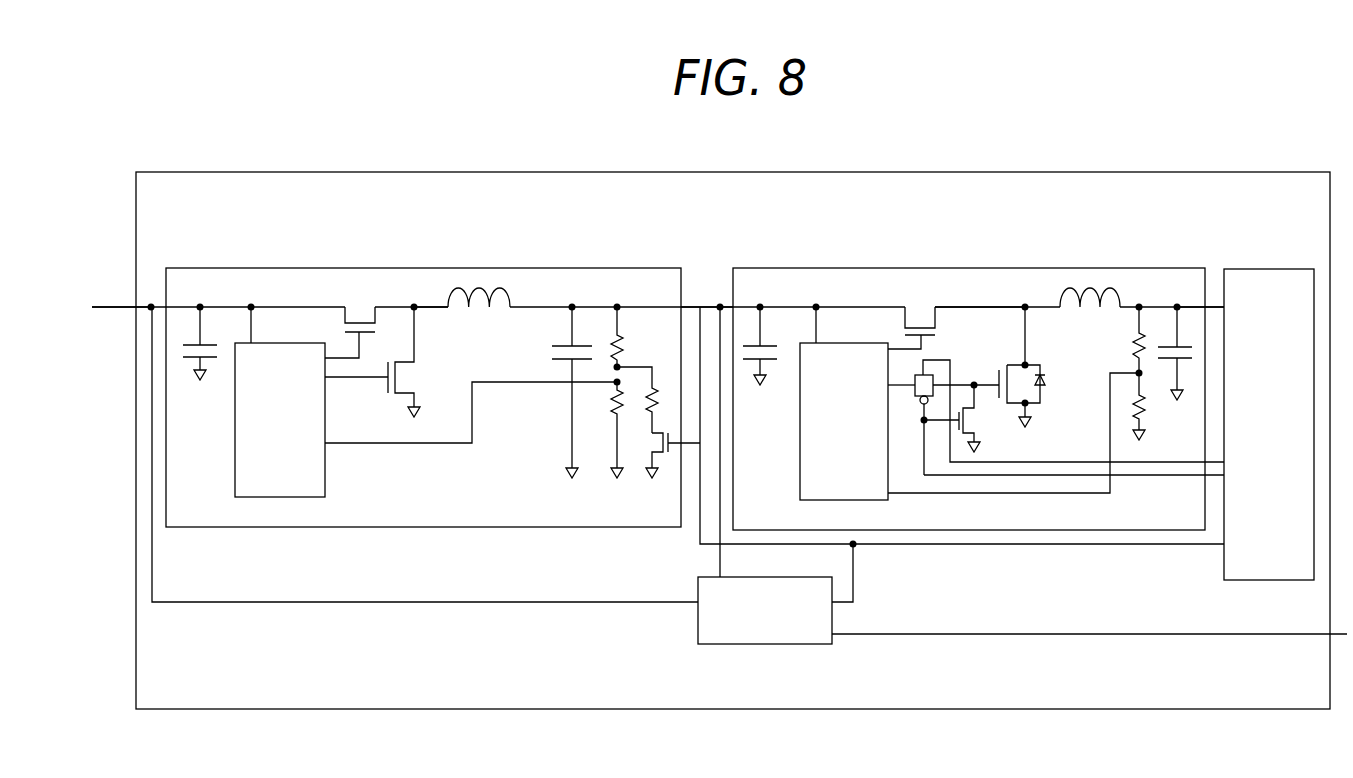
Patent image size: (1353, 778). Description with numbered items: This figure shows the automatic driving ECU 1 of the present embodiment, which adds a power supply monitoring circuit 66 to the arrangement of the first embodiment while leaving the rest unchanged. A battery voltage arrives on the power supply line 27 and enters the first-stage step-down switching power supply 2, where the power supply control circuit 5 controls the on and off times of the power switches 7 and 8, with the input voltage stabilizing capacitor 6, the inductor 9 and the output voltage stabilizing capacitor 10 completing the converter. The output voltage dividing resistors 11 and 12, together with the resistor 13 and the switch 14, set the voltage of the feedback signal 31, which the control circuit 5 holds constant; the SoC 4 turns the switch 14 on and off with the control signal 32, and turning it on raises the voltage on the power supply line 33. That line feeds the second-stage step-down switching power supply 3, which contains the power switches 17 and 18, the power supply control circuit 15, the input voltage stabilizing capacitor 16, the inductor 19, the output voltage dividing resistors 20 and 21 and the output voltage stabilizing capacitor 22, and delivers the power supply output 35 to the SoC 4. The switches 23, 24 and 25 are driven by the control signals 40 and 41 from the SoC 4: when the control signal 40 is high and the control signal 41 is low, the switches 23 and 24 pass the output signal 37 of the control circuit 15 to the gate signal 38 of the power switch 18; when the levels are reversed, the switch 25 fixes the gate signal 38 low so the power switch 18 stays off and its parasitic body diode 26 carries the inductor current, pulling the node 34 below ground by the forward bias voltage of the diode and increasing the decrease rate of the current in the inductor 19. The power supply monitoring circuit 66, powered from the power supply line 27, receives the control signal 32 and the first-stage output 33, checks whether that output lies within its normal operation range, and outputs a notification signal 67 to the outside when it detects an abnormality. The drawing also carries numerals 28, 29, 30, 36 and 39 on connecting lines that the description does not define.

The automatic driving ECU 1 is at (927, 172).
The first-stage step-down switching power supply 2 is at (515, 268).
The second-stage step-down switching power supply 3 is at (1085, 268).
The SoC 4 is at (1268, 269).
The power supply control circuit 5 is at (273, 343).
The input voltage stabilizing capacitor 6 is at (213, 340).
The power switch 7 is at (366, 323).
The power switch 8 is at (405, 388).
The inductor 9 is at (512, 293).
The output voltage stabilizing capacitor 10 is at (562, 344).
The output voltage dividing resistor 11 is at (625, 340).
The output voltage dividing resistor 12 is at (610, 402).
The resistor for changing output voltage dividing resistance ratio 13 is at (658, 402).
The switch for switching output voltage dividing resistance ratio 14 is at (661, 472).
The power supply control circuit 15 is at (838, 343).
The input voltage stabilizing capacitor 16 is at (768, 340).
The power switch 17 is at (920, 325).
The power switch 18 is at (1007, 364).
The inductor 19 is at (1122, 293).
The output voltage dividing resistor 20 is at (1130, 347).
The output voltage dividing resistor 21 is at (1147, 414).
The output voltage stabilizing capacitor 22 is at (1184, 368).
The switch 23 is at (931, 372).
The switch 24 is at (921, 410).
The switch 25 is at (976, 425).
The diode 26 is at (1048, 380).
The power supply line 27 is at (114, 305).
The switching node 28 is at (432, 305).
The gate control line 29 is at (350, 382).
The gate control line 30 is at (376, 384).
The feedback signal 31 is at (401, 445).
The control signal 32 is at (930, 547).
The power supply line 33 is at (700, 305).
The node 34 is at (993, 305).
The power supply output 35 is at (1211, 305).
The gate control line 36 is at (896, 348).
The output signal 37 is at (904, 388).
The gate signal 38 is at (978, 382).
The feedback line 39 is at (967, 496).
The control signal 40 is at (1128, 464).
The control signal 41 is at (1165, 478).
The power supply monitoring circuit 66 is at (773, 645).
The notification signal 67 is at (930, 636).